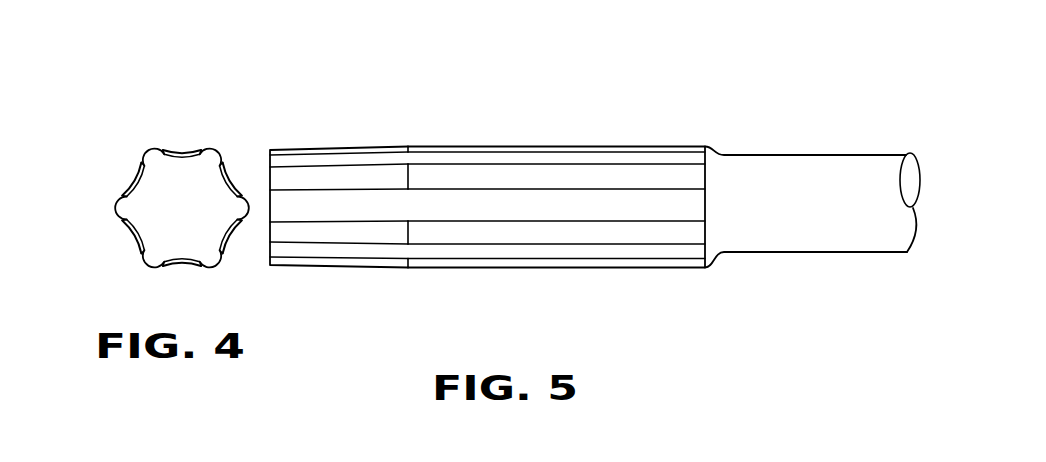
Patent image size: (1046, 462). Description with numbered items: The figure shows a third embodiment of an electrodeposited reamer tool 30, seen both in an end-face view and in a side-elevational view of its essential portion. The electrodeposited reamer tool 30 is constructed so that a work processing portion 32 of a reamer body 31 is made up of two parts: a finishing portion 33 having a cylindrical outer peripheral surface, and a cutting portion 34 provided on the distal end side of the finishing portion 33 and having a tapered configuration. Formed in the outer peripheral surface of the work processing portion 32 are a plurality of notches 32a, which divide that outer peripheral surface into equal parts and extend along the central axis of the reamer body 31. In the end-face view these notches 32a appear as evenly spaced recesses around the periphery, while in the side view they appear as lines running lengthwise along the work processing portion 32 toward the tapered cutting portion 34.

In FIG. 4, the electrodeposited reamer tool 30 is at (143, 135).
In FIG. 5, the electrodeposited reamer tool 30 is at (730, 105).
In FIG. 5, the reamer body 31 is at (758, 153).
In FIG. 4, the work processing portion 32 is at (182, 142).
In FIG. 5, the work processing portion 32 is at (713, 102).
In FIG. 4, the notches 32a is at (143, 155).
In FIG. 5, the notches 32a is at (522, 252).
In FIG. 5, the finishing portion 33 is at (488, 268).
In FIG. 5, the cutting portion 34 is at (340, 270).